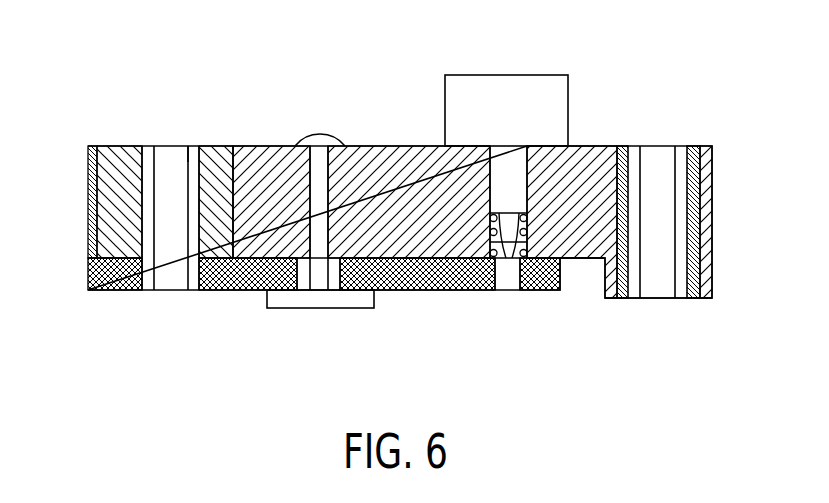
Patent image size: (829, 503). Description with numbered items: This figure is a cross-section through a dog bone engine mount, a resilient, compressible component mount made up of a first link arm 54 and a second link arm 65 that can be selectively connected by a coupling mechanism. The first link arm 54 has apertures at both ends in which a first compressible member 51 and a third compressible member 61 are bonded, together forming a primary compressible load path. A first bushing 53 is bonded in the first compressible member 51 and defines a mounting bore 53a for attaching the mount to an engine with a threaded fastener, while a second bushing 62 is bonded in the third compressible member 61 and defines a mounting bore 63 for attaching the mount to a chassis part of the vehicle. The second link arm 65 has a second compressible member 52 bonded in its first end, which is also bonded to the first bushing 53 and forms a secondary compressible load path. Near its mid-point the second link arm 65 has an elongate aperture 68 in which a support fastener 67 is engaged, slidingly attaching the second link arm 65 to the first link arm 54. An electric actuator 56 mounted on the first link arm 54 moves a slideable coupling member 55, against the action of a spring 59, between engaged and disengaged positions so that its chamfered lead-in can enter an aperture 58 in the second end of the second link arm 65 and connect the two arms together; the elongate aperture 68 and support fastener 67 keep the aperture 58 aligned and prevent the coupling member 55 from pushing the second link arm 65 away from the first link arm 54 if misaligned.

The first compressible member 51 is at (118, 152).
The second compressible member 52 is at (117, 291).
The first bushing 53 is at (150, 150).
The mounting bore 53a is at (187, 160).
The first link arm 54 is at (354, 153).
The coupling member 55 is at (496, 158).
The electric actuator 56 is at (507, 75).
The aperture 58 is at (519, 277).
The spring 59 is at (511, 213).
The third compressible member 61 is at (622, 299).
The second bushing 62 is at (623, 152).
The mounting bore 63 is at (672, 158).
The second link arm 65 is at (255, 291).
The support fastener 67 is at (365, 310).
The elongate aperture 68 is at (338, 277).